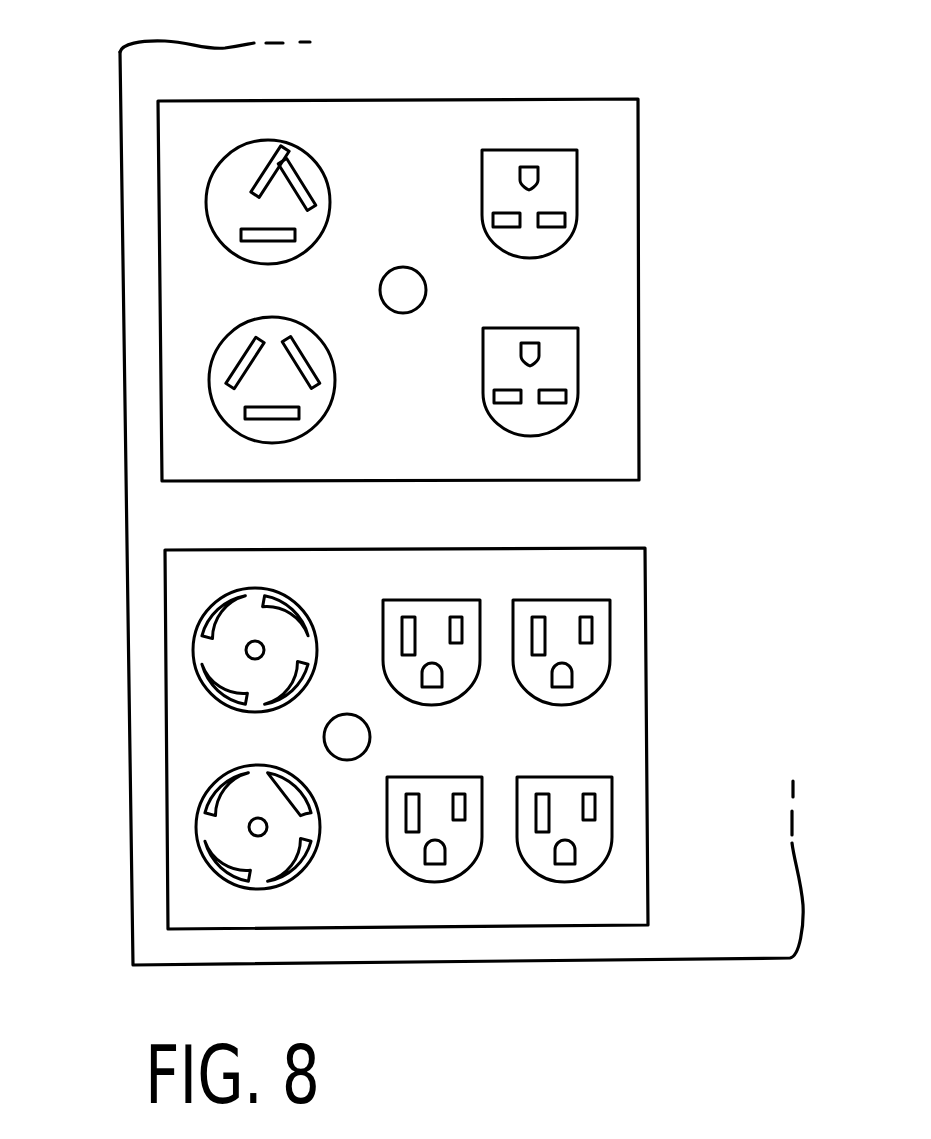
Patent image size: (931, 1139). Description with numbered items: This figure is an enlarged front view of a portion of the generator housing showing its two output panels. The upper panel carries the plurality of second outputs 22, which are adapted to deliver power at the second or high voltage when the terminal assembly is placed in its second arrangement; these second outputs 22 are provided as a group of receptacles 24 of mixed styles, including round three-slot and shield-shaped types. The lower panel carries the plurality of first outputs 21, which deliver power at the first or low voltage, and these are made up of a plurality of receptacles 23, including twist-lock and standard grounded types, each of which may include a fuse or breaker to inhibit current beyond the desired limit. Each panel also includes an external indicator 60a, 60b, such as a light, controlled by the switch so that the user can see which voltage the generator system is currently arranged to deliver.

The first outputs 21 is at (674, 744).
The second outputs 22 is at (692, 161).
The receptacles 23 is at (597, 665).
The receptacles 24 is at (563, 195).
The external indicator 60a is at (362, 714).
The external indicator 60b is at (419, 270).